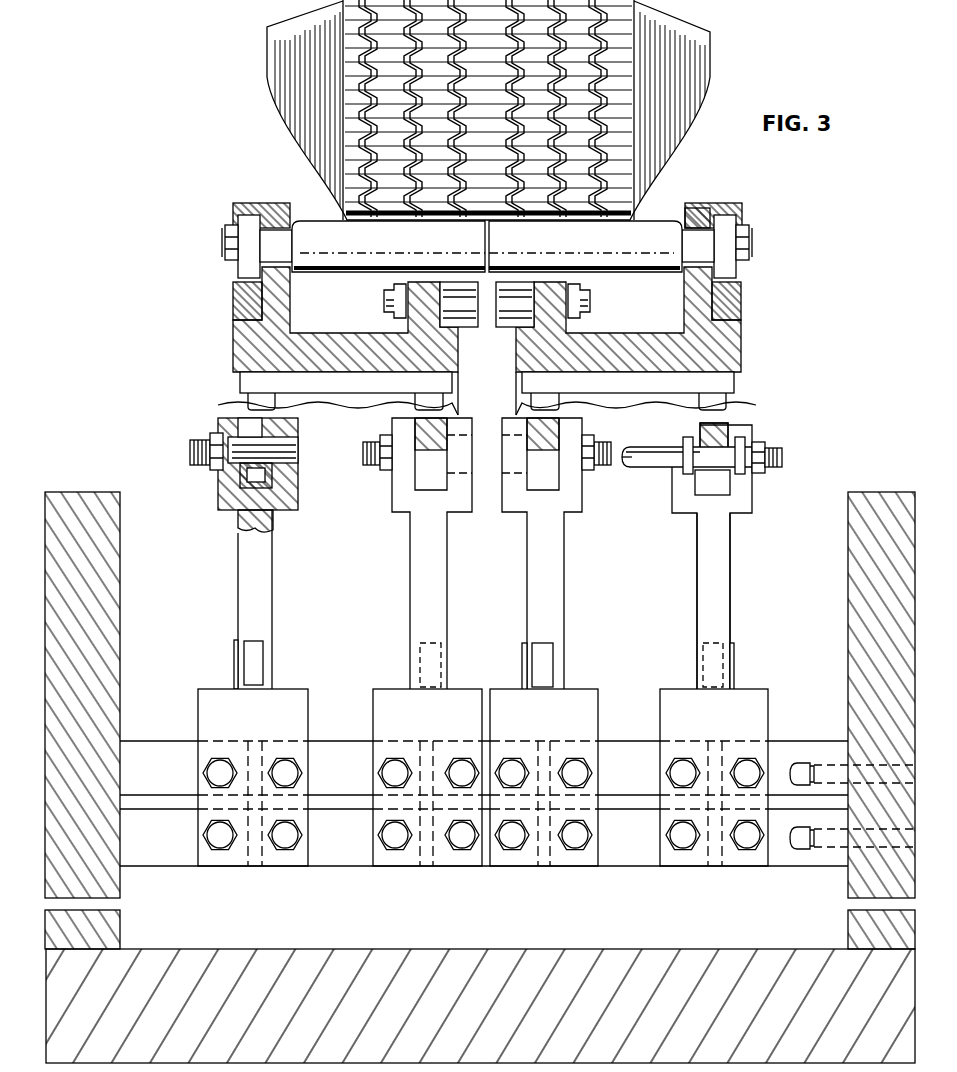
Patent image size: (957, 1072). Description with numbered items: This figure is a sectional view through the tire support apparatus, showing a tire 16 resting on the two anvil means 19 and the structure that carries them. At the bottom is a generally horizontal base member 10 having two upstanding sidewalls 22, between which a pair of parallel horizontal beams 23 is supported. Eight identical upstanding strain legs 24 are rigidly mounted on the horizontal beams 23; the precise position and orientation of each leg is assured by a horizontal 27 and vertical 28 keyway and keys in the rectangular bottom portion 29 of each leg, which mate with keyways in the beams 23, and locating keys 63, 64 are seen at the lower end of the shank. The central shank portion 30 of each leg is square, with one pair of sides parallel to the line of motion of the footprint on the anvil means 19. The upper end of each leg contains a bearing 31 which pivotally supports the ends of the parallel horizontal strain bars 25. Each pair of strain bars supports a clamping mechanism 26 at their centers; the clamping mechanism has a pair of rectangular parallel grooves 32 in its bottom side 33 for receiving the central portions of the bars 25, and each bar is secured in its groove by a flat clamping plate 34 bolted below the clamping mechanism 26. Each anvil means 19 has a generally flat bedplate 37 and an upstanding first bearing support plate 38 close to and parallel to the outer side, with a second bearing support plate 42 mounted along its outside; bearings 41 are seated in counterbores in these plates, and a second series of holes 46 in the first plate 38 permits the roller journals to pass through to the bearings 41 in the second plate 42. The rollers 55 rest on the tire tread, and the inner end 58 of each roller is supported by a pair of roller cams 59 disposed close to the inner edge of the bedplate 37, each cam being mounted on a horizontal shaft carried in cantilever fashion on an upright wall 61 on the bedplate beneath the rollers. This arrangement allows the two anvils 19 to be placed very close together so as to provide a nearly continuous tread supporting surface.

The base member 10 is at (358, 968).
The tire 16 is at (290, 110).
The anvil means 19 is at (504, 289).
The sidewalls 22 is at (80, 505).
The horizontal beams 23 is at (175, 845).
The strain legs 24 is at (517, 646).
The strain bars 25 is at (222, 428).
The clamping mechanism 26 is at (248, 380).
The horizontal keyway 27 is at (608, 807).
The vertical keyway 28 is at (420, 741).
The rectangular bottom portion 29 is at (210, 716).
The central shank portion 30 is at (242, 578).
The bearing 31 is at (250, 425).
The rectangular parallel grooves 32 is at (722, 430).
The bottom side 33 is at (620, 450).
The clamping plate 34 is at (653, 462).
The bedplate 37 is at (330, 352).
The first bearing support plate 38 is at (272, 205).
The bearing 41 is at (245, 245).
The second bearing support plate 42 is at (240, 298).
The second series of holes 46 is at (693, 208).
The roller 55 is at (327, 222).
The inner end 58 is at (490, 278).
The roller cams 59 is at (508, 310).
The upright wall 61 is at (560, 330).
The shim plate 63 is at (236, 655).
The key block 64 is at (255, 660).